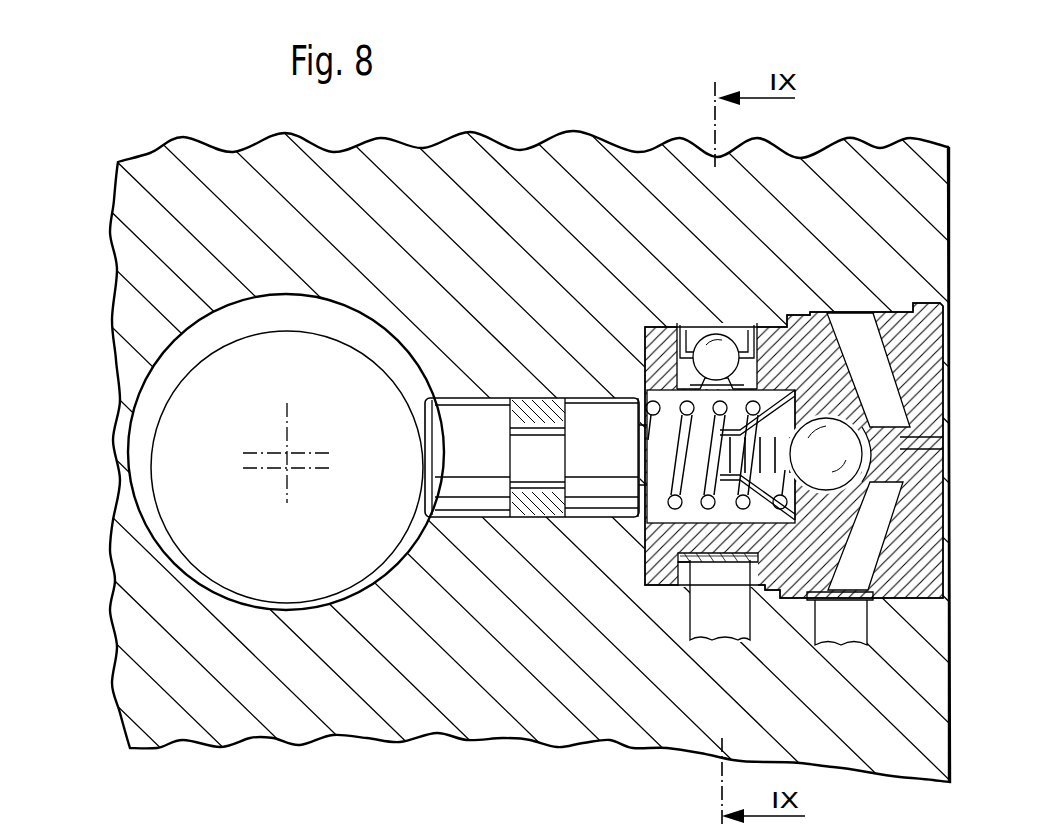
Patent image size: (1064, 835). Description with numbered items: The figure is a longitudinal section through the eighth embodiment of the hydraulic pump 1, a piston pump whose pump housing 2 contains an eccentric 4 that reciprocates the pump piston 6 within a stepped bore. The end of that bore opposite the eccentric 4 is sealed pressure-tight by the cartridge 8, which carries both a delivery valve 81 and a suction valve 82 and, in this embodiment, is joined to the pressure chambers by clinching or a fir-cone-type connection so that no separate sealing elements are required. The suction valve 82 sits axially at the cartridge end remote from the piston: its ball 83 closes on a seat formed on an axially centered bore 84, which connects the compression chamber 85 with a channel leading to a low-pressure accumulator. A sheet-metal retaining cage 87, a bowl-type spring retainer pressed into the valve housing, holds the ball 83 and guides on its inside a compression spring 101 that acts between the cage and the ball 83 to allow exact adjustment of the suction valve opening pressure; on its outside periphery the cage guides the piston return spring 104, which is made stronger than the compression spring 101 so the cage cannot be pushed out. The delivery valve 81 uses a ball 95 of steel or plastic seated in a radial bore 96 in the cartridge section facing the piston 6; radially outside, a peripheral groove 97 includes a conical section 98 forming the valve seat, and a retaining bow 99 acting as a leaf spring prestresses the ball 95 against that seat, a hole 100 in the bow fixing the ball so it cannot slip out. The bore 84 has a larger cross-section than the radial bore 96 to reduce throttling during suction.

The hydraulic pump 1 is at (536, 128).
The pump housing 2 is at (920, 246).
The eccentric 4 is at (362, 532).
The pump piston 6 is at (478, 495).
The cartridge 8 is at (968, 340).
The delivery valve 81 is at (676, 308).
The suction valve 82 is at (862, 394).
The ball 83 is at (856, 448).
The bore 84 is at (880, 488).
The compression chamber 85 is at (648, 440).
The retaining cage 87 is at (768, 545).
The ball 95 is at (720, 345).
The radial bore 96 is at (688, 382).
The peripheral groove 97 is at (690, 575).
The conical section 98 is at (760, 330).
The retaining bow 99 is at (738, 640).
The hole 100 is at (703, 322).
The compression spring 101 is at (793, 318).
The piston return spring 104 is at (704, 640).